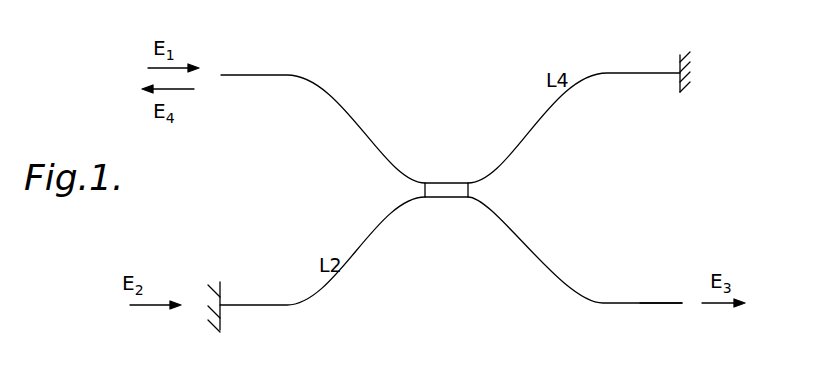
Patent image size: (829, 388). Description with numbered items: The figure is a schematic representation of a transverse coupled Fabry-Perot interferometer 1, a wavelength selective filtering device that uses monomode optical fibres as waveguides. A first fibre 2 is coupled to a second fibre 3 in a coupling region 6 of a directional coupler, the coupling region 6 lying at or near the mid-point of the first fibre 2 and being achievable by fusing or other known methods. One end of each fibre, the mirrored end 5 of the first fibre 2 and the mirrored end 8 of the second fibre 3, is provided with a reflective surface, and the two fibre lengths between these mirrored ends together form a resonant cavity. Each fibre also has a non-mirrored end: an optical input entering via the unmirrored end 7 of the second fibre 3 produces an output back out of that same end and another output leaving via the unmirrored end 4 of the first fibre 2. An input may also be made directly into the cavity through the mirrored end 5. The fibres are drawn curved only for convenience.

The transverse coupled Fabry-Perot interferometer 1 is at (449, 87).
The first fibre 2 is at (538, 262).
The second fibre 3 is at (606, 75).
The non-mirrored end 4 is at (681, 306).
The mirrored end 5 is at (222, 303).
The coupling region 6 is at (457, 197).
The non-mirrored end 7 is at (222, 75).
The mirrored end 8 is at (680, 92).